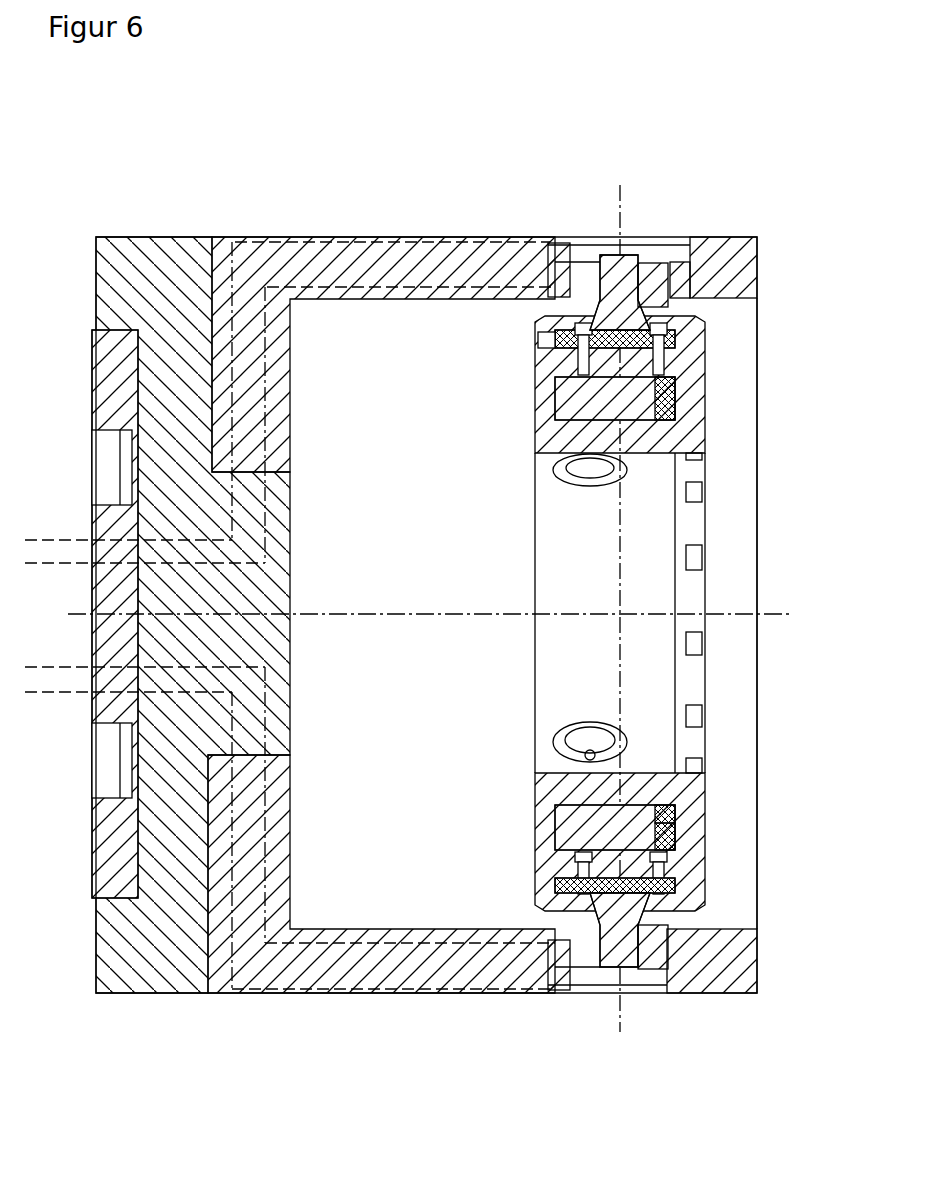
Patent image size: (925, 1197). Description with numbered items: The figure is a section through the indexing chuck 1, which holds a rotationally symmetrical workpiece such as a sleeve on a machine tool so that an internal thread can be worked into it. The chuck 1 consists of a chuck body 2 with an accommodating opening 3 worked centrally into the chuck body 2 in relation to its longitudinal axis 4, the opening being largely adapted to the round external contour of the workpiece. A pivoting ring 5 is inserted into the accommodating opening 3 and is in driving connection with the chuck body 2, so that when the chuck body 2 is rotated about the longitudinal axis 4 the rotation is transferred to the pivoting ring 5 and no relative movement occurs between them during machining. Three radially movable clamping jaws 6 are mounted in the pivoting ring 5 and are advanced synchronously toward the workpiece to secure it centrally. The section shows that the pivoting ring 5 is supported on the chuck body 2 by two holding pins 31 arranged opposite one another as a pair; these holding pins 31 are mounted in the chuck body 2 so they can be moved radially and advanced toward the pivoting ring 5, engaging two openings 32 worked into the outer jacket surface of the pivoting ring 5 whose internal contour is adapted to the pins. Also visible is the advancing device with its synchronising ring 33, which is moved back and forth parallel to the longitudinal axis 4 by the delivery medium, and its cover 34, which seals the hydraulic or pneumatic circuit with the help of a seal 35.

The indexing chuck 1 is at (668, 152).
The chuck body 2 is at (730, 983).
The accommodating opening 3 is at (738, 887).
The longitudinal axis 4 is at (773, 614).
The pivoting ring 5 is at (720, 377).
The clamping jaws 6 is at (627, 470).
The holding pins 31 is at (640, 258).
The openings 32 is at (725, 237).
The synchronising ring 33 is at (672, 797).
The cover 34 is at (675, 828).
The seal 35 is at (675, 808).